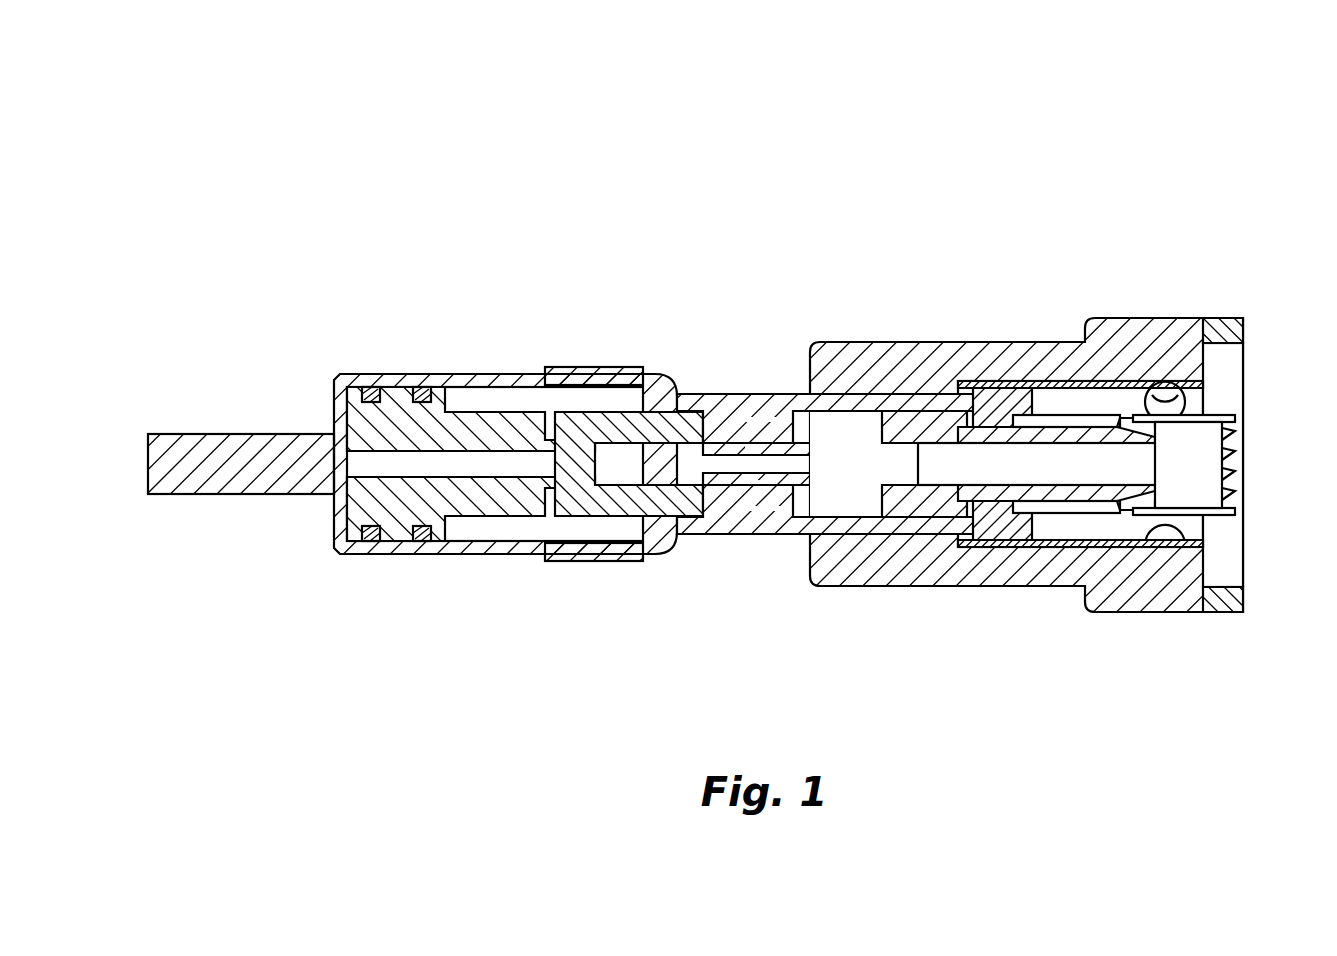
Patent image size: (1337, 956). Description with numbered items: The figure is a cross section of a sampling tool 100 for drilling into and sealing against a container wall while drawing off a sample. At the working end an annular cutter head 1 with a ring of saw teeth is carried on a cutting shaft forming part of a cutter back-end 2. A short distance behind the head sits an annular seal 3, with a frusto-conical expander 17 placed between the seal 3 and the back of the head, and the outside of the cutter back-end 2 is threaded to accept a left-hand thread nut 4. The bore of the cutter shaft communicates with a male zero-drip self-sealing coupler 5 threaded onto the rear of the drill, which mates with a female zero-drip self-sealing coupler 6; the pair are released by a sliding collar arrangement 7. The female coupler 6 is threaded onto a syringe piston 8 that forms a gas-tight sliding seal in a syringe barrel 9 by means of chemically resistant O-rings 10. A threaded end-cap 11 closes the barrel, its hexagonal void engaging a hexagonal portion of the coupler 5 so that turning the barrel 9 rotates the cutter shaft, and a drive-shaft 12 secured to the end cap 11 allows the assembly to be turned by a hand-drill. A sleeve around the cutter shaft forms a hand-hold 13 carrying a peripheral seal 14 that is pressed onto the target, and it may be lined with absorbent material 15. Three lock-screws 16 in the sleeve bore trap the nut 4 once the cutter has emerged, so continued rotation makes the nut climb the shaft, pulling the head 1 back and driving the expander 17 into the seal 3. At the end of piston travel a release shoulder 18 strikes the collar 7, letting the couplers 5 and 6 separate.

The connector assembly 100 is at (740, 214).
The cutter head 1 is at (1215, 413).
The cutter back-end 2 is at (1073, 430).
The annular seal 3 is at (1081, 514).
The left-hand thread nut 4 is at (997, 523).
The male zero-drip self-sealing coupler 5 is at (903, 418).
The female zero-drip self-sealing coupler 6 is at (658, 500).
The sliding collar arrangement 7 is at (718, 412).
The syringe piston 8 is at (495, 428).
The syringe barrel 9 is at (463, 548).
The O-rings 10 is at (370, 385).
The threaded end-cap 11 is at (718, 526).
The drive-shaft 12 is at (243, 462).
The hand-hold 13 is at (892, 573).
The peripheral seal 14 is at (1223, 603).
The chemically resistant and absorbent material 15 is at (967, 378).
The lock-screws 16 is at (1166, 393).
The frusto-conical expander 17 is at (1123, 408).
The release shoulder 18 is at (875, 519).